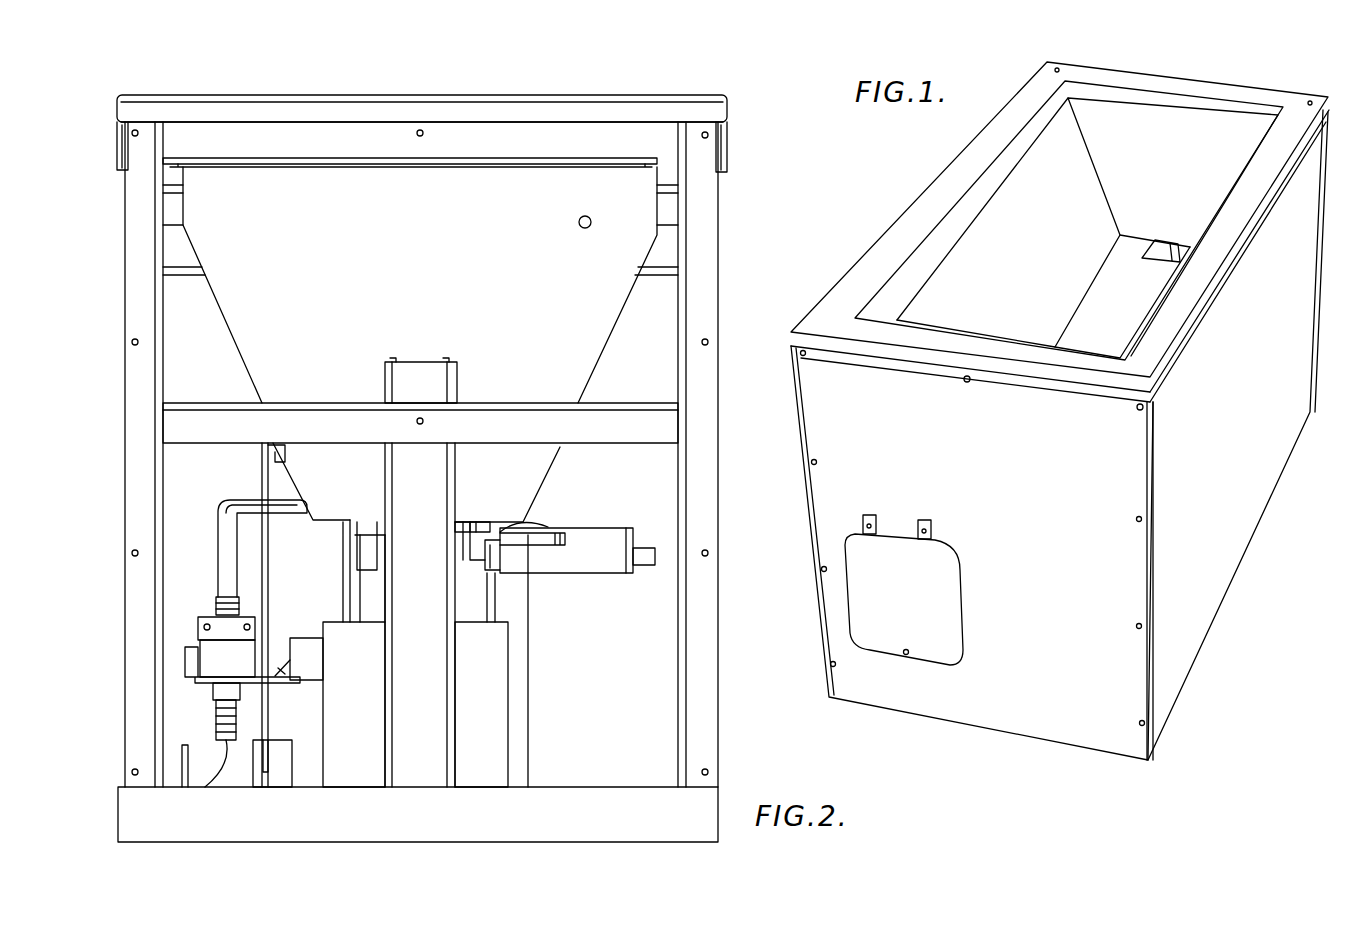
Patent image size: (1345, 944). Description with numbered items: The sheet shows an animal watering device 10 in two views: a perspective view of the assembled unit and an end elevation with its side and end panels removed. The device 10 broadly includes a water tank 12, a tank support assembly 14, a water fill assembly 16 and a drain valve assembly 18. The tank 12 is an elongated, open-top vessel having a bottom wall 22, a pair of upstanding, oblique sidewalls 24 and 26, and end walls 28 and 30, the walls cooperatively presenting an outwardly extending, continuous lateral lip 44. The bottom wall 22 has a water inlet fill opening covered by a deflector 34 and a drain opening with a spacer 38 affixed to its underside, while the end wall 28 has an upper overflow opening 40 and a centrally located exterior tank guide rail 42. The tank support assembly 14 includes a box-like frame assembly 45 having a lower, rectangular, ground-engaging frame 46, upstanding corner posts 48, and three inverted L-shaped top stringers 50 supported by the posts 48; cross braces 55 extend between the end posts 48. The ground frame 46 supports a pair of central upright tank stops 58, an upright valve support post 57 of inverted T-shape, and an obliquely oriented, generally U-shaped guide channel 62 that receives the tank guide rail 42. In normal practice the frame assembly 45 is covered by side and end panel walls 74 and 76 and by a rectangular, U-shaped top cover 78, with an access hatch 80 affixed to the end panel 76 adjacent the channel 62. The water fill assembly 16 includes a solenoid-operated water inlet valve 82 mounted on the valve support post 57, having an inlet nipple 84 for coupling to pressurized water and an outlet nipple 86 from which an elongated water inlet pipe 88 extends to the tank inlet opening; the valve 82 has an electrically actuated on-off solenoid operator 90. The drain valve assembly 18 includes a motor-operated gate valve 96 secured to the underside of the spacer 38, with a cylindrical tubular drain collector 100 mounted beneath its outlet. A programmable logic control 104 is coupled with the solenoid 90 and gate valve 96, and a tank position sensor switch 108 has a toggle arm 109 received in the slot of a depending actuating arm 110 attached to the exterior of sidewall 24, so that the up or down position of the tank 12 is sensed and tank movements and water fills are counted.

In FIG. 1, the animal watering device 10 is at (905, 130).
In FIG. 2, the water tank 12 is at (371, 285).
In FIG. 1, the water tank 12 is at (1026, 252).
In FIG. 2, the tank support assembly 14 is at (105, 322).
In FIG. 2, the water fill assembly 16 is at (213, 615).
In FIG. 2, the drain valve assembly 18 is at (570, 533).
In FIG. 2, the bottom wall 22 is at (325, 520).
In FIG. 1, the bottom wall 22 is at (1098, 298).
In FIG. 2, the sidewall 24 is at (232, 352).
In FIG. 1, the sidewall 24 is at (1055, 180).
In FIG. 2, the sidewall 26 is at (612, 325).
In FIG. 2, the end wall 28 is at (416, 206).
In FIG. 1, the end wall 30 is at (1190, 150).
In FIG. 1, the deflector 34 is at (1160, 240).
In FIG. 2, the spacer 38 is at (468, 522).
In FIG. 2, the upper overflow opening 40 is at (579, 222).
In FIG. 2, the tank guide rail 42 is at (432, 362).
In FIG. 2, the lateral lip 44 is at (252, 168).
In FIG. 2, the frame assembly 45 is at (745, 212).
In FIG. 2, the ground-engaging frame 46 is at (567, 810).
In FIG. 2, the corner posts 48 is at (126, 452).
In FIG. 2, the top stringers 50 is at (118, 136).
In FIG. 2, the cross braces 55 is at (652, 287).
In FIG. 2, the valve support post 57 is at (237, 768).
In FIG. 2, the tank stops 58 is at (318, 562).
In FIG. 2, the guide channel 62 is at (428, 662).
In FIG. 1, the side panel wall 74 is at (1225, 565).
In FIG. 1, the end panel wall 76 is at (1012, 725).
In FIG. 2, the top cover 78 is at (470, 100).
In FIG. 1, the top cover 78 is at (853, 290).
In FIG. 1, the access hatch 80 is at (940, 585).
In FIG. 2, the water inlet valve 82 is at (214, 690).
In FIG. 2, the inlet nipple 84 is at (225, 748).
In FIG. 2, the outlet nipple 86 is at (218, 606).
In FIG. 2, the water inlet pipe 88 is at (256, 500).
In FIG. 2, the solenoid operator 90 is at (200, 656).
In FIG. 2, the gate valve 96 is at (592, 575).
In FIG. 2, the drain collector 100 is at (492, 740).
In FIG. 2, the programmable logic control 104 is at (292, 756).
In FIG. 2, the tank position sensor switch 108 is at (320, 665).
In FIG. 2, the toggle arm 109 is at (283, 660).
In FIG. 2, the actuating arm 110 is at (280, 462).